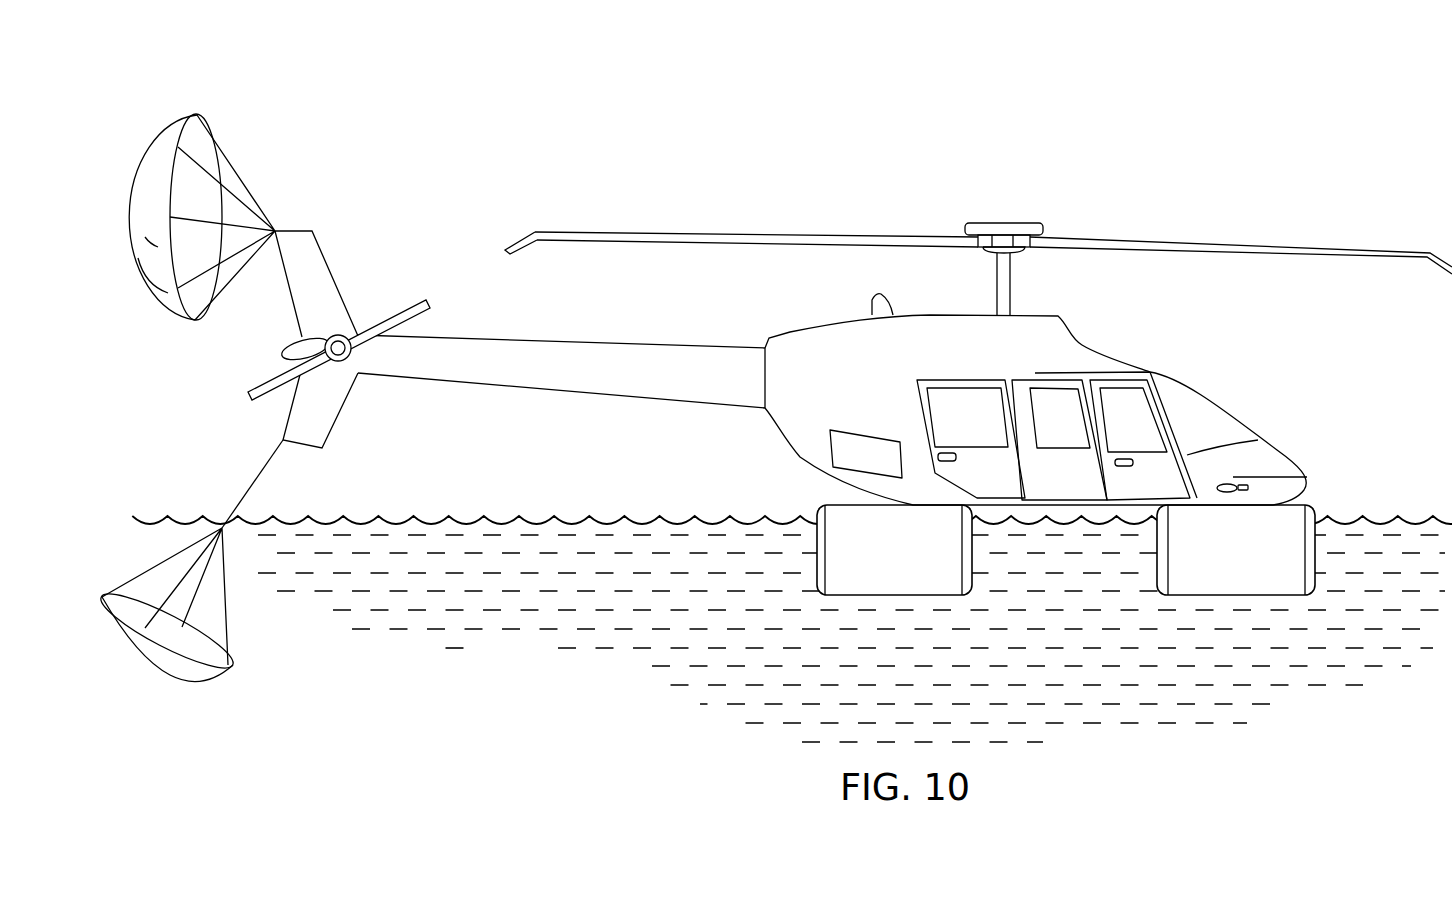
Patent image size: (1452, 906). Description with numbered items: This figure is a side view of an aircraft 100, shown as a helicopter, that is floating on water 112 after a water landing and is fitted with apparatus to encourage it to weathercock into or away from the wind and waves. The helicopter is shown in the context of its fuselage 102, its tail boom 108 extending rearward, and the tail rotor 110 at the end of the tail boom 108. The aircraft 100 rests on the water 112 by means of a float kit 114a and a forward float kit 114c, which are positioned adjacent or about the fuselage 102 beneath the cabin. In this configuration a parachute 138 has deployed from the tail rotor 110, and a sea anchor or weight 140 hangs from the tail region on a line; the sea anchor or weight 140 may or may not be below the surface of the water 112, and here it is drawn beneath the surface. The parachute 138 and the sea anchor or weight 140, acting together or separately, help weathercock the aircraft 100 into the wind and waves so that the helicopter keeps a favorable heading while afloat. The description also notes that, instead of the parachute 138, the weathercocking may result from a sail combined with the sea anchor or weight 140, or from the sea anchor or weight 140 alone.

The aircraft 100 is at (850, 311).
The fuselage 102 is at (1275, 445).
The tail boom 108 is at (665, 345).
The tail rotor 110 is at (417, 297).
The water 112 is at (642, 523).
The float kit 114a is at (817, 550).
The forward float kit 114c is at (1315, 553).
The parachute 138 is at (168, 127).
The sea anchor or weight 140 is at (177, 663).